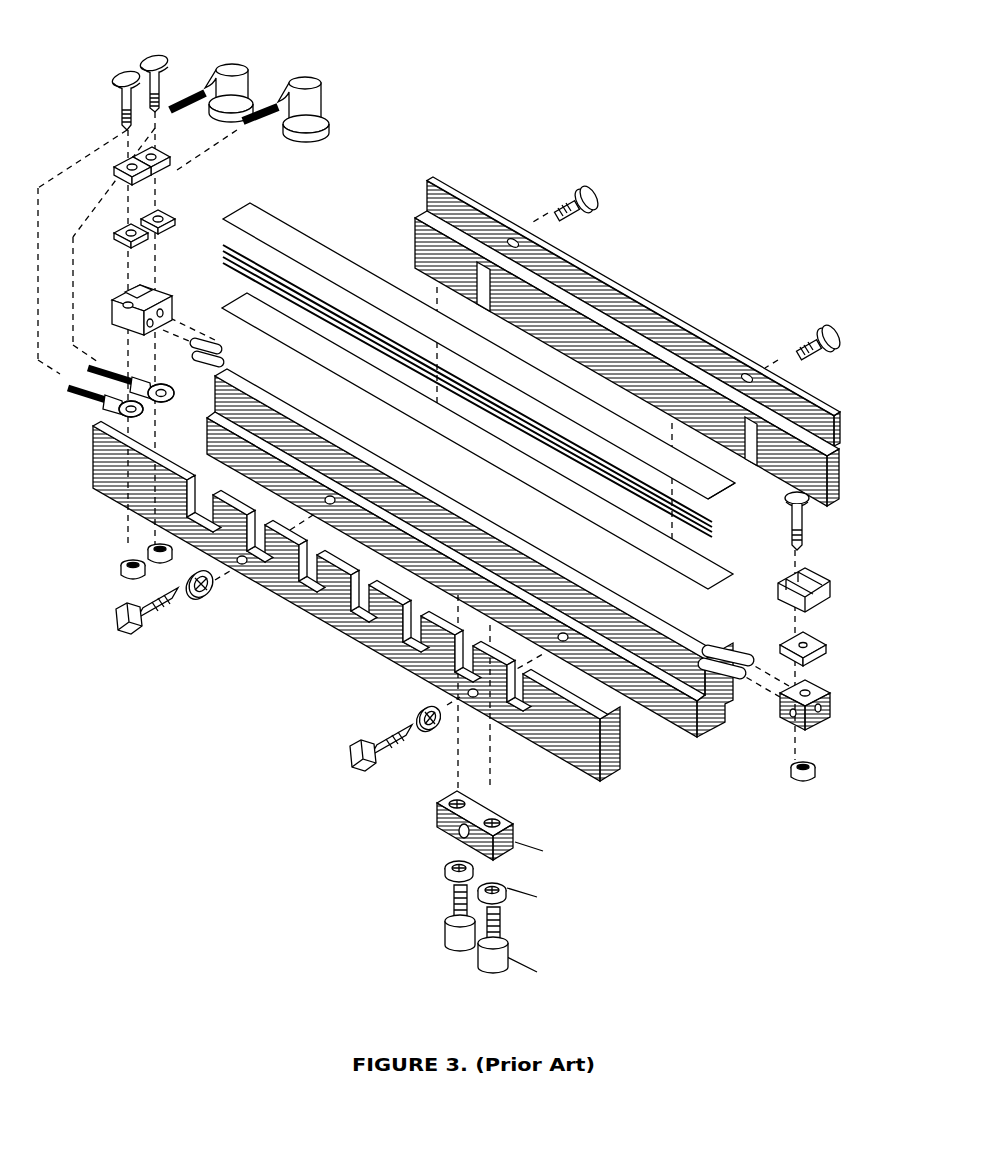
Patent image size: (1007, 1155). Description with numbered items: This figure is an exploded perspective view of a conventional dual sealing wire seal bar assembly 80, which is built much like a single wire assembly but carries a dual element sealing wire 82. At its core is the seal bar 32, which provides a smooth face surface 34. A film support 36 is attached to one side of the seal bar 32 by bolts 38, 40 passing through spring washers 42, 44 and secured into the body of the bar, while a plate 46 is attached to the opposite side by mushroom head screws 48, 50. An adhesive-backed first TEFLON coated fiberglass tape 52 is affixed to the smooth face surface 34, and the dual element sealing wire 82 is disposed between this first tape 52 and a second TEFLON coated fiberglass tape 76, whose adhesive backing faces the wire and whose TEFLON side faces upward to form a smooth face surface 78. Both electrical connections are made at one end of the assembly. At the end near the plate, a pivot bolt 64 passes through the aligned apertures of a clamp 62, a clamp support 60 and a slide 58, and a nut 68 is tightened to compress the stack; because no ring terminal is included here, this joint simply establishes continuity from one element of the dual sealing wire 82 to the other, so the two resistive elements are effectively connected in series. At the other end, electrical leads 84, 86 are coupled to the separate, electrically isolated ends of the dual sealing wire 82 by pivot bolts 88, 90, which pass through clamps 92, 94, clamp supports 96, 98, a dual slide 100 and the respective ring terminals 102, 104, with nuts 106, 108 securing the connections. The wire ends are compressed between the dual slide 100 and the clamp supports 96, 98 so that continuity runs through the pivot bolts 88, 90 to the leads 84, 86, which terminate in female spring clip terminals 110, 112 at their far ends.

The seal bar 32 is at (698, 737).
The smooth face surface 34 is at (687, 628).
The film support 36 is at (320, 623).
The bolt 38 is at (125, 629).
The bolt 40 is at (352, 746).
The spring washer 42 is at (212, 590).
The spring washer 44 is at (413, 707).
The plate 46 is at (663, 304).
The mushroom head screw 48 is at (584, 185).
The mushroom head screw 50 is at (830, 326).
The first TEFLON coated fiberglass tape 52 is at (733, 571).
The slide 58 is at (823, 713).
The clamp support 60 is at (826, 647).
The clamp 62 is at (830, 590).
The pivot bolt 64 is at (812, 522).
The nut 68 is at (817, 766).
The second TEFLON coated fiberglass tape 76 is at (735, 487).
The smooth face surface 78 is at (343, 261).
The dual sealing wire seal bar assembly 80 is at (175, 771).
The dual element sealing wire 82 is at (724, 526).
The electrical lead 84 is at (73, 381).
The electrical lead 86 is at (98, 404).
The pivot bolt 88 is at (113, 77).
The pivot bolt 90 is at (164, 56).
The clamp 92 is at (117, 178).
The clamp 94 is at (165, 153).
The clamp support 96 is at (117, 243).
The clamp support 98 is at (167, 220).
The dual slide 100 is at (117, 320).
The ring terminal 102 is at (143, 418).
The ring terminal 104 is at (167, 402).
The nut 106 is at (122, 562).
The nut 108 is at (147, 548).
The female spring clip terminal 110 is at (238, 74).
The female spring clip terminal 112 is at (300, 84).